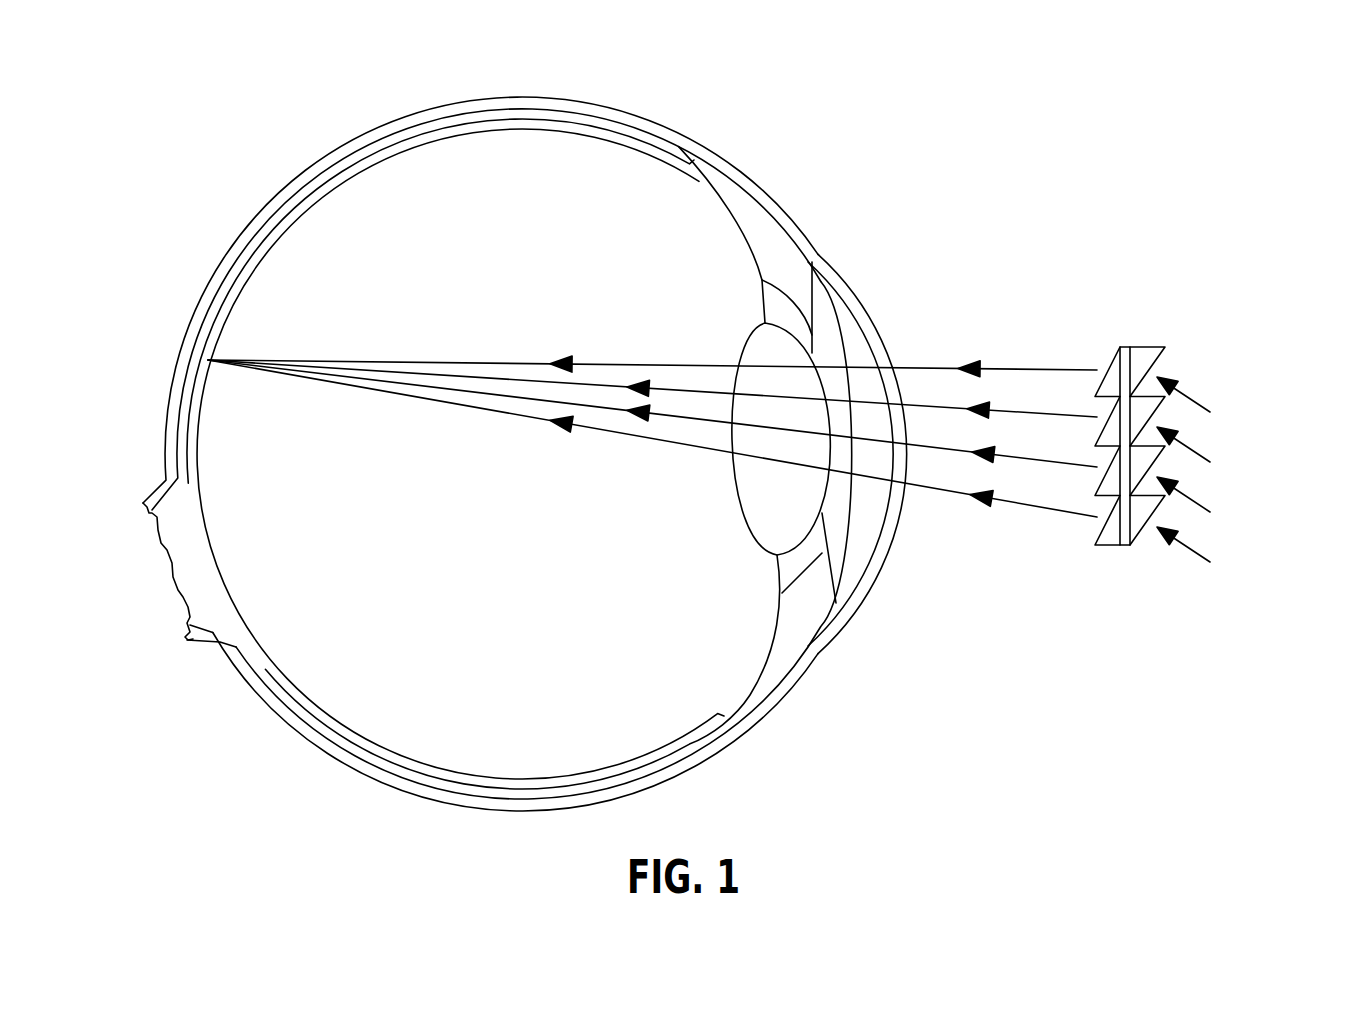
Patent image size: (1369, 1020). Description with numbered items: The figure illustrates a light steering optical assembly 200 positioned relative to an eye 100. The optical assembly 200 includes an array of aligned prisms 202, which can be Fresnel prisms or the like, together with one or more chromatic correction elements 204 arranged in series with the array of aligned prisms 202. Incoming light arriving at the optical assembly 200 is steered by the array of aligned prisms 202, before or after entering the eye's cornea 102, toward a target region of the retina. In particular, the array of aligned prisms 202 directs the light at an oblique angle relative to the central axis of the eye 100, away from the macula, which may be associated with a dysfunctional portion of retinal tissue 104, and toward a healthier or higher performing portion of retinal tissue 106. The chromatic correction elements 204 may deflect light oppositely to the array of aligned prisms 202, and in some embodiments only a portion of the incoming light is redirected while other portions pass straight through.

The eye 100 is at (806, 97).
The cornea 102 is at (860, 538).
The dysfunctional portion of retinal tissue 104 is at (177, 447).
The portion of retinal tissue 106 is at (190, 360).
The optical assembly 200 is at (1252, 314).
The array of aligned prisms 202 is at (1147, 347).
The chromatic correction elements 204 is at (1113, 360).